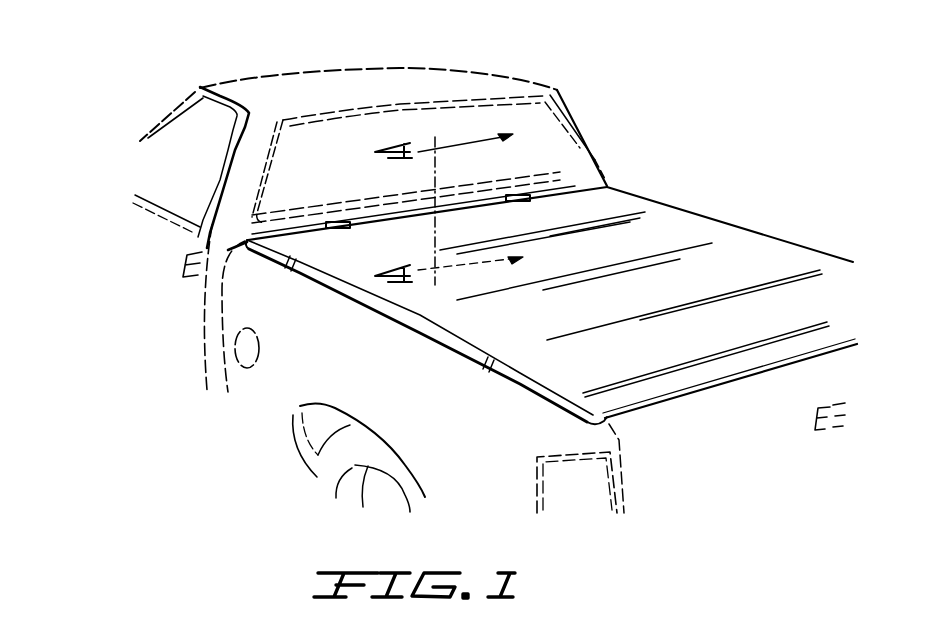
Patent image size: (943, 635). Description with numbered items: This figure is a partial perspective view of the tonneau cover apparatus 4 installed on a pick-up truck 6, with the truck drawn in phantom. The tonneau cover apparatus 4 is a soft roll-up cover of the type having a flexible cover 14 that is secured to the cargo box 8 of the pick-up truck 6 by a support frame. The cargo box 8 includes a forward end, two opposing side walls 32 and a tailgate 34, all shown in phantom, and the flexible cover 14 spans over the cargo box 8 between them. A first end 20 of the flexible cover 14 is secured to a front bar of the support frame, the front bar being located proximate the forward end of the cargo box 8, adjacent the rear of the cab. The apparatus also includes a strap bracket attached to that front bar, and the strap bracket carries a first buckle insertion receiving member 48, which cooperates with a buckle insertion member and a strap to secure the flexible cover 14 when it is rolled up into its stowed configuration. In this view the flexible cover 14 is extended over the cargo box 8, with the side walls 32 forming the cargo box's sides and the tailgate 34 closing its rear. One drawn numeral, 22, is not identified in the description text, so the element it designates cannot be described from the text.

The tonneau cover apparatus 4 is at (705, 137).
The pick-up truck 6 is at (198, 89).
The cargo box 8 is at (336, 363).
The flexible cover 14 is at (749, 278).
The first end 20 is at (560, 191).
The side rail 22 is at (708, 368).
The side walls 32 is at (521, 419).
The tailgate 34 is at (647, 435).
The first buckle insertion receiving member 48 is at (340, 222).